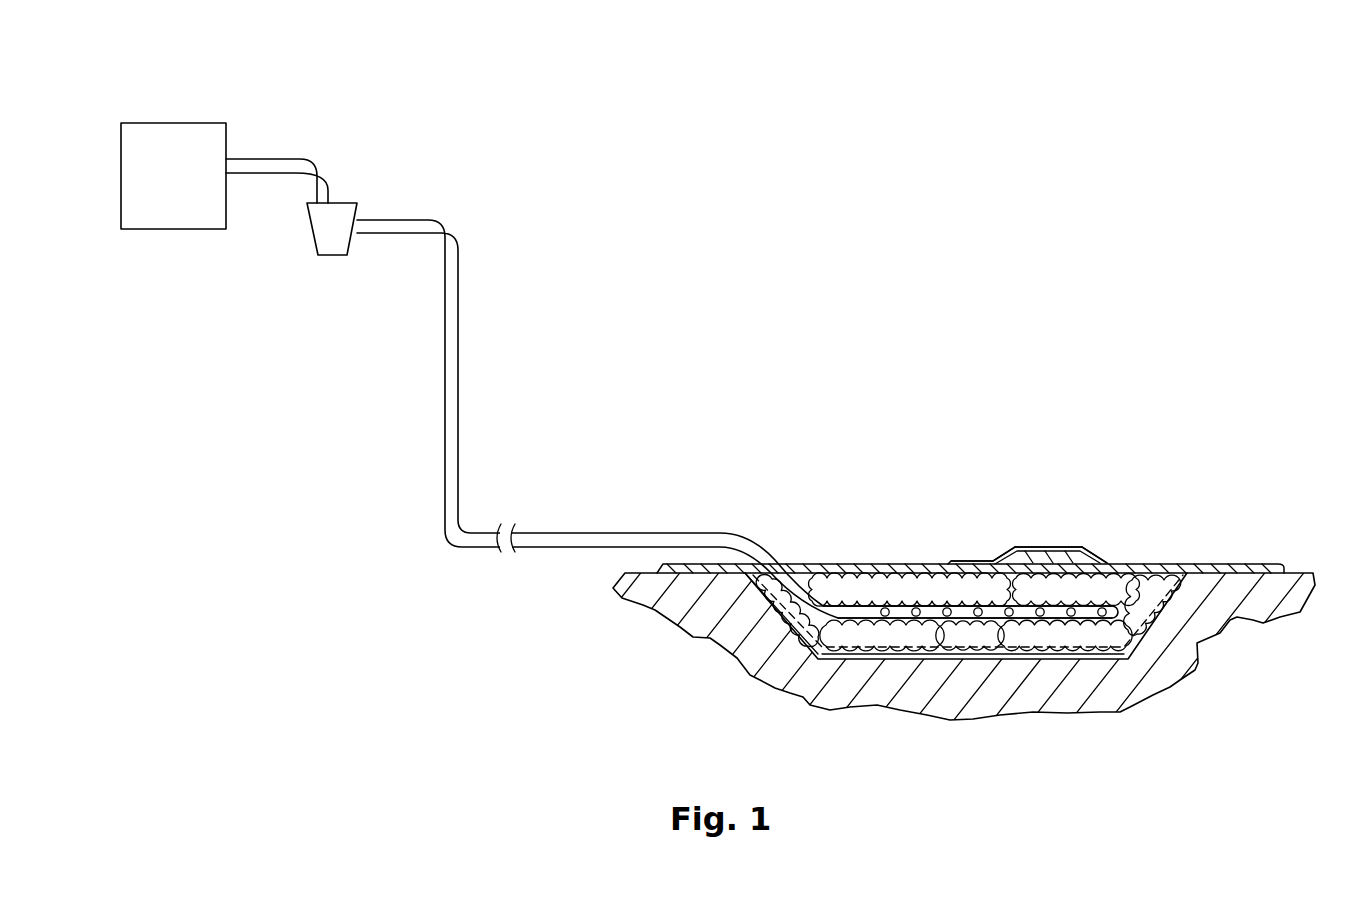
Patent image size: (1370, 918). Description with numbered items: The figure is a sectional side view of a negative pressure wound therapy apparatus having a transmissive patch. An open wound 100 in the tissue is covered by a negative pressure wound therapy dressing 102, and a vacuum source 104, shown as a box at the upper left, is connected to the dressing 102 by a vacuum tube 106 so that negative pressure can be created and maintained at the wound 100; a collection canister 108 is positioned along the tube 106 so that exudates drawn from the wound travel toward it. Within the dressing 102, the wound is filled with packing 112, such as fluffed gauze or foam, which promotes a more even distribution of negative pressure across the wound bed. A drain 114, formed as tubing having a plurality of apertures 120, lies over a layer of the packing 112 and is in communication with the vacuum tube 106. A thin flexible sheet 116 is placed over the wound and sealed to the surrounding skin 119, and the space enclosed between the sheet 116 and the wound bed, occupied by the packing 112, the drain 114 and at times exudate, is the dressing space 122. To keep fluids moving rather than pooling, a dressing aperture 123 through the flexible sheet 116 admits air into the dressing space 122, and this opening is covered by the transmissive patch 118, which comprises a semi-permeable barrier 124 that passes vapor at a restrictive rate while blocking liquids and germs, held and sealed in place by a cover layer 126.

The wound 100 is at (1200, 680).
The negative pressure wound therapy dressing 102 is at (838, 450).
The vacuum source 104 is at (196, 92).
The vacuum tube 106 is at (460, 295).
The collection canister 108 is at (330, 253).
The packing 112 is at (872, 633).
The drain 114 is at (898, 613).
The flexible sheet 116 is at (818, 572).
The transmissive patch 118 is at (1040, 505).
The skin 119 is at (1303, 563).
The apertures 120 is at (1070, 613).
The dressing space 122 is at (1060, 645).
The dressing aperture 123 is at (1048, 570).
The semi-permeable barrier 124 is at (1100, 563).
The cover layer 126 is at (1007, 562).